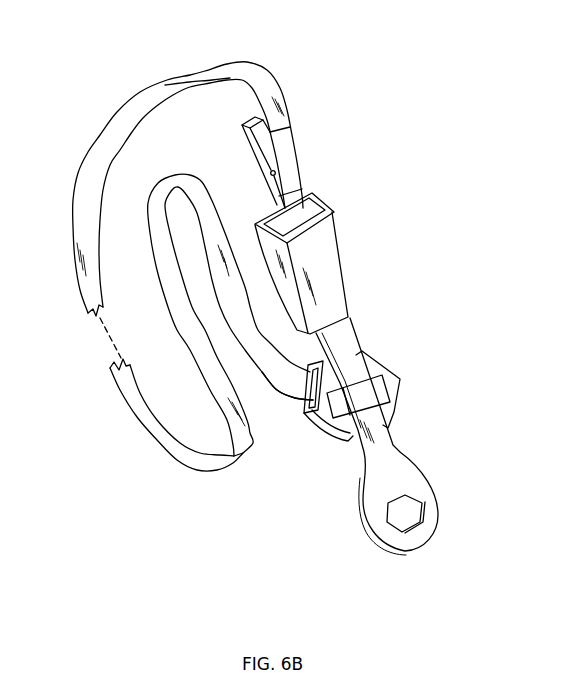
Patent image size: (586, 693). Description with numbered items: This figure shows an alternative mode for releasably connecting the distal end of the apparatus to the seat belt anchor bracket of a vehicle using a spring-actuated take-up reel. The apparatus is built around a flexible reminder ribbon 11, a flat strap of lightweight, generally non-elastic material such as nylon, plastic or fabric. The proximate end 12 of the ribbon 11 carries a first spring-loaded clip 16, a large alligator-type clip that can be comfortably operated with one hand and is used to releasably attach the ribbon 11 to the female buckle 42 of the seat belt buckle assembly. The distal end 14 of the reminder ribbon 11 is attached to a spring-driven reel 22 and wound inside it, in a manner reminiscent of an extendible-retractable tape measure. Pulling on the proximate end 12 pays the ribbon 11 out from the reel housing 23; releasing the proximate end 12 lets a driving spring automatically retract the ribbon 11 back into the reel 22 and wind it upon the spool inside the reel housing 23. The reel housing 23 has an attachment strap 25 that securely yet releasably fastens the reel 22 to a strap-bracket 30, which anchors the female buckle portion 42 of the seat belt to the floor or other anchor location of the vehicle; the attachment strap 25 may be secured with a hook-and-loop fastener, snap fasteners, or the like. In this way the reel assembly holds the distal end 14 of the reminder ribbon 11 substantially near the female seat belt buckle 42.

The reminder ribbon 11 is at (82, 172).
The proximate end 12 is at (205, 66).
The distal end 14 is at (277, 391).
The first spring-loaded clip 16 is at (296, 150).
The female buckle 42 is at (330, 260).
The spring-driven reel 22 is at (324, 446).
The reel housing 23 is at (387, 362).
The attachment strap 25 is at (358, 398).
The strap-bracket 30 is at (392, 472).